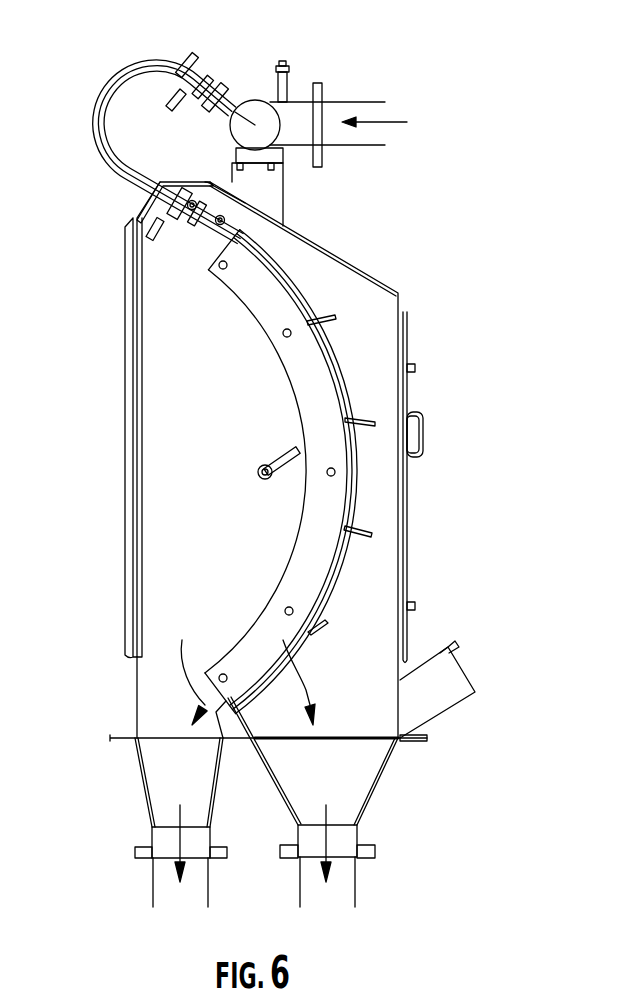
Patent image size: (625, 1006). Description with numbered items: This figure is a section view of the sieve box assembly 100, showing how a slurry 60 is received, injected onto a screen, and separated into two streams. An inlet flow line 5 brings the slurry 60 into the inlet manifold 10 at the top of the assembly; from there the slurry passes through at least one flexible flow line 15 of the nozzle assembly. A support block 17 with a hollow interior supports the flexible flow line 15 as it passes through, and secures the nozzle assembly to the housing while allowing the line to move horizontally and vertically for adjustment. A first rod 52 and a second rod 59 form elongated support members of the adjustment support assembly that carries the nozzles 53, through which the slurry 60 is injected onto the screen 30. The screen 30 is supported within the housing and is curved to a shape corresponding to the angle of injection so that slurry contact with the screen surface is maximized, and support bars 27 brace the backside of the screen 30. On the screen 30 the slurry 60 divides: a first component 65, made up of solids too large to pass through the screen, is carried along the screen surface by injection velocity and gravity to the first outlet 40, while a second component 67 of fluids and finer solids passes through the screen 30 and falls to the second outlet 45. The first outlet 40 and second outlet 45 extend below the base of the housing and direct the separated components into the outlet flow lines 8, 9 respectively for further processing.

The inlet flow line 5 is at (355, 102).
The outlet flow line 8 is at (153, 888).
The outlet flow line 9 is at (357, 882).
The inlet manifold 10 is at (253, 100).
The flexible flow line 15 is at (118, 72).
The support block 17 is at (148, 182).
The support bar 27 is at (334, 320).
The screen 30 is at (336, 392).
The first outlet 40 is at (140, 773).
The second outlet 45 is at (378, 783).
The first rod 52 is at (226, 224).
The nozzle 53 is at (188, 240).
The second rod 59 is at (212, 186).
The slurry 60 is at (407, 122).
The first component 65 is at (189, 667).
The second component 67 is at (306, 684).
The sieve box assembly 100 is at (390, 215).